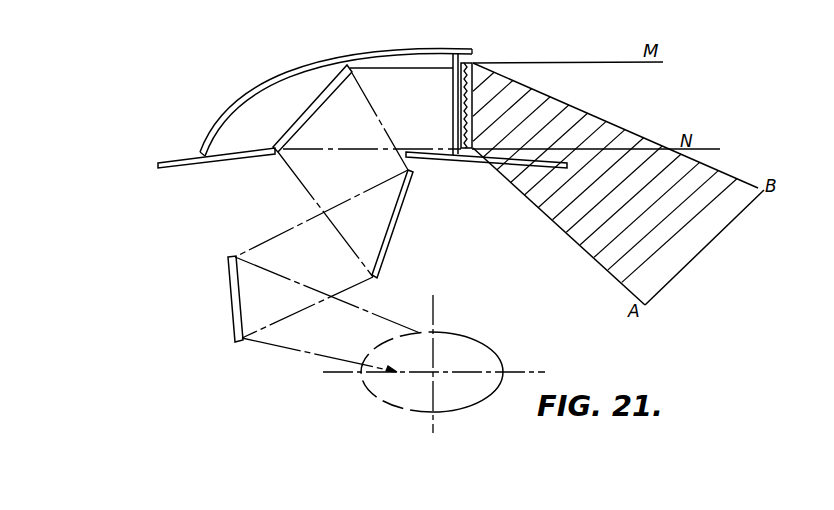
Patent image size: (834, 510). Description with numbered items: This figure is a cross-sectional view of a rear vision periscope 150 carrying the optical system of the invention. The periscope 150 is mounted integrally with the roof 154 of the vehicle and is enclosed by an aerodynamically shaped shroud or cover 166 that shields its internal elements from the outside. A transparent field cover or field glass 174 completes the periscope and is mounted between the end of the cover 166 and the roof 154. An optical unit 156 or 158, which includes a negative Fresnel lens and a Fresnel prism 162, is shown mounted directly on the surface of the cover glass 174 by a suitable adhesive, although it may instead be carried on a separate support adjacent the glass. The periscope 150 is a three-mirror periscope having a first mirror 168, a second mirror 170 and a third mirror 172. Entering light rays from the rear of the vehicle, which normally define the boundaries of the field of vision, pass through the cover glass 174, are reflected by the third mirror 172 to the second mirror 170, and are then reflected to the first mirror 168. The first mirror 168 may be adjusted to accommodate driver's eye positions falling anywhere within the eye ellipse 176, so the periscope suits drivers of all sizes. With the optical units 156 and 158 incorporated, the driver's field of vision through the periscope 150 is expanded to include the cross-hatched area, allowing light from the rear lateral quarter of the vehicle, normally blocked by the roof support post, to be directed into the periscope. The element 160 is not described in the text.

The rear vision periscope 150 is at (245, 87).
The roof 154 is at (173, 162).
The optical unit 156 is at (480, 59).
The optical unit 158 is at (466, 105).
The support strip 160 is at (457, 138).
The Fresnel prism 162 is at (472, 136).
The shroud or cover 166 is at (310, 69).
The first mirror 168 is at (232, 306).
The second mirror 170 is at (393, 236).
The third mirror 172 is at (300, 117).
The field glass 174 is at (453, 88).
The eye ellipse 176 is at (467, 336).